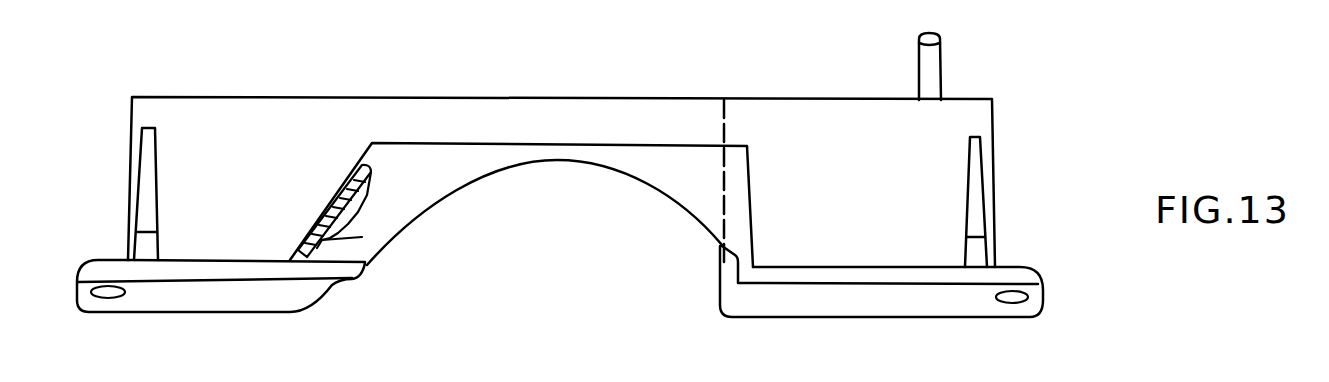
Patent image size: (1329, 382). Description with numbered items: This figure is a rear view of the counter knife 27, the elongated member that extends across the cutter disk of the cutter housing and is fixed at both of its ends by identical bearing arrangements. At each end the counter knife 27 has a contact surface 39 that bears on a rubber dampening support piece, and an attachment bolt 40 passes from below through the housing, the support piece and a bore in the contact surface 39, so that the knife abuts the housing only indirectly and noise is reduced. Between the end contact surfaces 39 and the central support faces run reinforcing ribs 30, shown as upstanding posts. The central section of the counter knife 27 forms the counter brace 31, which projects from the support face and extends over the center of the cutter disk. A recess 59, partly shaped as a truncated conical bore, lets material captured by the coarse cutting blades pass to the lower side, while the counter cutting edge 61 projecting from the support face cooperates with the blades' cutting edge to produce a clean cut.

The counter knife 27 is at (598, 97).
The reinforcing ribs 30 is at (147, 138).
The counter brace 31 is at (928, 61).
The contact surface 39 is at (230, 314).
The attachment bolt 40 is at (107, 291).
The recess 59 is at (360, 237).
The counter cutting edge 61 is at (720, 265).